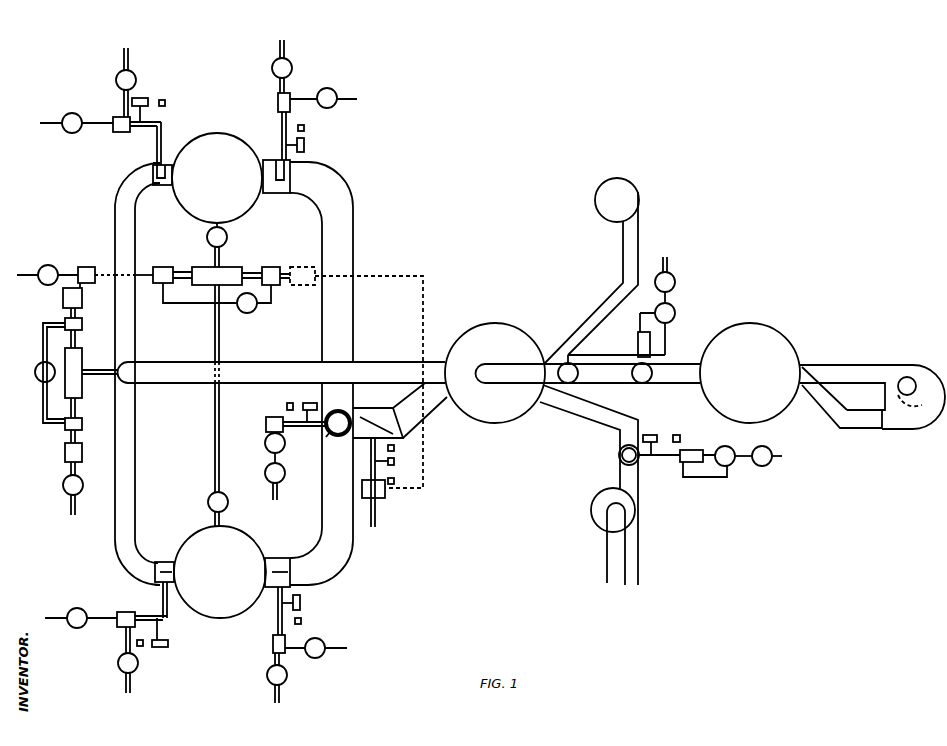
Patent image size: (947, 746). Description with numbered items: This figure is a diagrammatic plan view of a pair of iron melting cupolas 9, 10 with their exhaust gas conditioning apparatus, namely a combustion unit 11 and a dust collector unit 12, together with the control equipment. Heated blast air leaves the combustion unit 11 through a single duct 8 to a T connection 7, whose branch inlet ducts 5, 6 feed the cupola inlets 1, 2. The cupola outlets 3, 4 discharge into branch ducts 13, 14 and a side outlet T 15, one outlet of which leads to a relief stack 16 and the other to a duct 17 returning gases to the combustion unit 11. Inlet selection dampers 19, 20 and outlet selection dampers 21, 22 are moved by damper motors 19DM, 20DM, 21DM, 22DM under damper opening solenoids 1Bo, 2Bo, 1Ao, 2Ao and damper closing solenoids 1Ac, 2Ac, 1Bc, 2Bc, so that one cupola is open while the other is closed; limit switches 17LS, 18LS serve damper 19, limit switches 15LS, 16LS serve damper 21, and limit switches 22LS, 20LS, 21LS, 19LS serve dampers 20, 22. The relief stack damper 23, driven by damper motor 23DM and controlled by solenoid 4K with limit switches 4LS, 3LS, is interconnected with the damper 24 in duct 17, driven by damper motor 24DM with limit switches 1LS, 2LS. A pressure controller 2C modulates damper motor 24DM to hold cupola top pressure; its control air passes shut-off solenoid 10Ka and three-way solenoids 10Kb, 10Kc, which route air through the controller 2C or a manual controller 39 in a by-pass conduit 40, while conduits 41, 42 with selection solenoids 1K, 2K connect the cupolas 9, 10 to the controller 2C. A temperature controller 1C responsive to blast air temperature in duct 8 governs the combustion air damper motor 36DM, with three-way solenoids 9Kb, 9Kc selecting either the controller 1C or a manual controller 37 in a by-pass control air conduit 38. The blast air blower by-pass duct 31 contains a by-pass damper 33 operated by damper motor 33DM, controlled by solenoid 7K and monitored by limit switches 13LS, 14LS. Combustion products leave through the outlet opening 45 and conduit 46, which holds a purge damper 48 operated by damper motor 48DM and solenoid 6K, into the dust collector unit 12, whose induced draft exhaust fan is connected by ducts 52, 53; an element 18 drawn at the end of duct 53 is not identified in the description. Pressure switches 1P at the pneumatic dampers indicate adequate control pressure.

The cupola inlet 1 is at (164, 558).
The cupola inlet 2 is at (166, 185).
The cupola outlet 3 is at (270, 582).
The cupola outlet 4 is at (268, 196).
The branch inlet duct 5 is at (135, 488).
The branch inlet duct 6 is at (135, 320).
The T connection 7 is at (135, 385).
The blast air duct 8 is at (253, 367).
The iron melting cupola 9 is at (215, 610).
The iron melting cupola 10 is at (235, 196).
The combustion unit 11 is at (497, 418).
The dust collector unit 12 is at (767, 408).
The branch duct 13 is at (322, 516).
The branch duct 14 is at (322, 330).
The side outlet T 15 is at (327, 437).
The relief stack 16 is at (340, 437).
The duct 17 is at (394, 448).
The ball 18 is at (905, 403).
The inlet selection damper 19 is at (157, 563).
The inlet selection damper 20 is at (160, 188).
The outlet selection damper 21 is at (283, 568).
The outlet selection damper 22 is at (270, 160).
The relief stack damper 23 is at (337, 410).
The damper 24 is at (368, 415).
The by-pass duct 31 is at (619, 457).
The by-pass damper 33 is at (633, 458).
The manual controller 37 is at (35, 372).
The by-pass control air conduit 38 is at (43, 408).
The manual controller 39 is at (240, 316).
The by-pass conduit 40 is at (200, 308).
The conduit 41 is at (214, 466).
The conduit 42 is at (213, 262).
The outlet opening 45 is at (486, 367).
The conduit 46 is at (518, 368).
The purge damper 48 is at (578, 375).
The duct 52 is at (858, 430).
The duct 53 is at (838, 365).
The pressure switch 1P is at (43, 266).
The selection solenoid 1K is at (228, 504).
The selection solenoid 2K is at (227, 237).
The electric solenoid 4K is at (265, 443).
The solenoid 6K is at (674, 309).
The solenoid 7K is at (730, 466).
The temperature controller 1C is at (77, 385).
The pressure controller 2C is at (227, 276).
The three-way solenoid 9Kb is at (82, 425).
The three-way solenoid 9Kc is at (82, 323).
The shut-off solenoid 10Ka is at (88, 268).
The solenoid 10Kb is at (160, 268).
The solenoid 10Kc is at (270, 268).
The damper opening solenoid 1Ao is at (315, 658).
The damper closing solenoid 1Ac is at (280, 687).
The damper opening solenoid 1Bo is at (75, 628).
The damper closing solenoid 1Bc is at (133, 670).
The damper opening solenoid 2Ao is at (290, 63).
The damper closing solenoid 2Ac is at (327, 108).
The damper opening solenoid 2Bo is at (72, 133).
The damper closing solenoid 2Bc is at (116, 80).
The damper motor 19DM is at (125, 612).
The damper motor 20DM is at (120, 133).
The damper motor 21DM is at (273, 644).
The damper motor 22DM is at (278, 102).
The damper motor 23DM is at (272, 416).
The damper motor 24DM is at (315, 263).
The damper motor 33DM is at (692, 450).
The damper motor 36DM is at (63, 302).
The damper motor 48DM is at (638, 346).
The limit switch 1LS is at (394, 462).
The limit switch 2LS is at (394, 481).
The limit switch 3LS is at (294, 397).
The limit switch 4LS is at (318, 402).
The limit switch 13LS is at (675, 433).
The limit switch 14LS is at (645, 433).
The limit switch 15LS is at (302, 600).
The limit switch 16LS is at (302, 621).
The limit switch 17LS is at (168, 644).
The limit switch 18LS is at (143, 646).
The limit switch 19LS is at (305, 128).
The limit switch 20LS is at (305, 150).
The limit switch 21LS is at (166, 101).
The limit switch 22LS is at (142, 98).